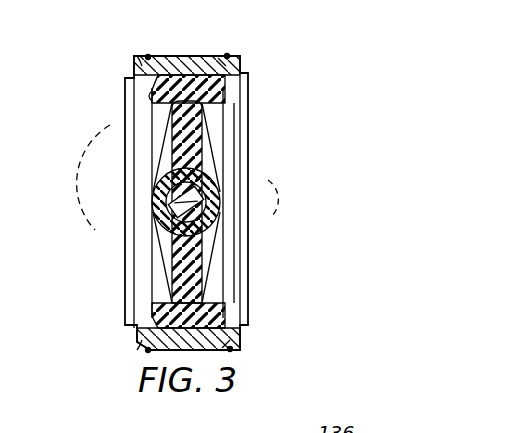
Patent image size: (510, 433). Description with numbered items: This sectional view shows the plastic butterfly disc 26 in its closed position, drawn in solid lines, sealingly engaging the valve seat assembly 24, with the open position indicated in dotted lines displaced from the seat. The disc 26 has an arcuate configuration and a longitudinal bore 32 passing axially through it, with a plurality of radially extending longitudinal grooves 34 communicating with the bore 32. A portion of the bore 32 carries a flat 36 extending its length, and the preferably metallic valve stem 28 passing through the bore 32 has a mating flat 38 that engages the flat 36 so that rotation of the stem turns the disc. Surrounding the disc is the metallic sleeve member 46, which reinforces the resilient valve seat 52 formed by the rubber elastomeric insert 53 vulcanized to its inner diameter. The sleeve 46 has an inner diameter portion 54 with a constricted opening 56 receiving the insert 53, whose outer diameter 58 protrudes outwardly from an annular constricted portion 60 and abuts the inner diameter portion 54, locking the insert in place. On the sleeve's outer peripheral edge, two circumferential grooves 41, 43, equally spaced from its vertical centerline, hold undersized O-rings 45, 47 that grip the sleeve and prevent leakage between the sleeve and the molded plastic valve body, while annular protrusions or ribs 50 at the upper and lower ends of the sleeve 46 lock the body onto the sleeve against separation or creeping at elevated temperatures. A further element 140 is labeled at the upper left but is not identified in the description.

The frame member 140 is at (30, 0).
The valve seat assembly 24 is at (250, 63).
The butterfly disc 26 is at (290, 187).
The valve stem 28 is at (216, 180).
The longitudinal bore 32 is at (203, 238).
The longitudinal grooves 34 is at (205, 218).
The flat 36 is at (152, 212).
The flat 38 is at (166, 192).
The circumferential groove 41 is at (141, 56).
The circumferential groove 43 is at (219, 58).
The O-ring 45 is at (148, 55).
The metallic sleeve member 46 is at (250, 100).
The O-ring 47 is at (228, 54).
The annular protrusions 50 is at (124, 78).
The valve seat 52 is at (213, 113).
The elastomeric insert 53 is at (206, 78).
The inner diameter portion 54 is at (232, 340).
The constricted opening 56 is at (148, 92).
The outer diameter 58 is at (138, 72).
The annular constricted portion 60 is at (150, 303).